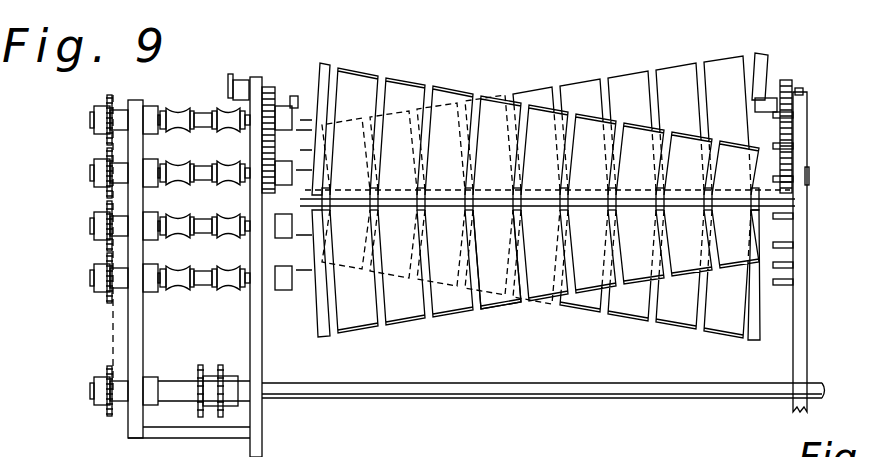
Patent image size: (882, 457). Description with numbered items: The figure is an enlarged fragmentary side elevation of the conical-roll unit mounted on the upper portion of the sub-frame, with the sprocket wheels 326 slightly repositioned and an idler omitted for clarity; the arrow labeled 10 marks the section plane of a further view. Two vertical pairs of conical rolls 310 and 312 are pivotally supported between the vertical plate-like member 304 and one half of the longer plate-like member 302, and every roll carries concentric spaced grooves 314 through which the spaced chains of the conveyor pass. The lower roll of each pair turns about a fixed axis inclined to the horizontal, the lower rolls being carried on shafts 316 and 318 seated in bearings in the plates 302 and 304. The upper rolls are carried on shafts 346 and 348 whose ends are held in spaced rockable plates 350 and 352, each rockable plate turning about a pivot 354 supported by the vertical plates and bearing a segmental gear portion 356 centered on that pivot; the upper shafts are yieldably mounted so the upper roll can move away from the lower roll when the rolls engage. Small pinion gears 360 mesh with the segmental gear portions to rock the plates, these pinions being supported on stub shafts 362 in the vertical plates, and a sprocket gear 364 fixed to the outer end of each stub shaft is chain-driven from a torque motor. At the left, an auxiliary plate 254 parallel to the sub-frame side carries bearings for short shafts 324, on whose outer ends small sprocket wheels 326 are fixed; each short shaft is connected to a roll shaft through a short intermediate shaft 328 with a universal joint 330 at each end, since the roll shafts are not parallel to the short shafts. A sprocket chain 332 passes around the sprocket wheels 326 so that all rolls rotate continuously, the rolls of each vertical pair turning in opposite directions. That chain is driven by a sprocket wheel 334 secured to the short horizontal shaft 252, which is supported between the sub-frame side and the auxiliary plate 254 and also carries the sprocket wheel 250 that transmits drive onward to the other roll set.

The drive assembly 10 is at (248, 77).
The sprocket wheel 250 is at (198, 414).
The short horizontally mounted shaft 252 is at (170, 385).
The auxiliary plate 254 is at (135, 100).
The plate-like member 302 is at (803, 245).
The plate-like member 304 is at (263, 354).
The conical rolls 310 is at (373, 330).
The conical rolls 312 is at (634, 318).
The concentric spaced grooves 314 is at (482, 313).
The shaft 316 is at (790, 226).
The shaft 318 is at (783, 282).
The short shafts 324 is at (93, 265).
The small sprocket wheels 326 is at (105, 300).
The short intermediate shafts 328 is at (200, 287).
The universal joints 330 is at (180, 237).
The sprocket chain 332 is at (110, 341).
The sprocket wheel 334 is at (105, 375).
The shaft 346 is at (300, 150).
The shaft 348 is at (338, 57).
The rockable plate 350 is at (268, 86).
The rockable plate 352 is at (786, 80).
The pivot 354 is at (810, 173).
The segmental gear portion 356 is at (787, 147).
The pinion gears 360 is at (799, 90).
The shafts 362 is at (758, 55).
The sprocket gear 364 is at (228, 82).